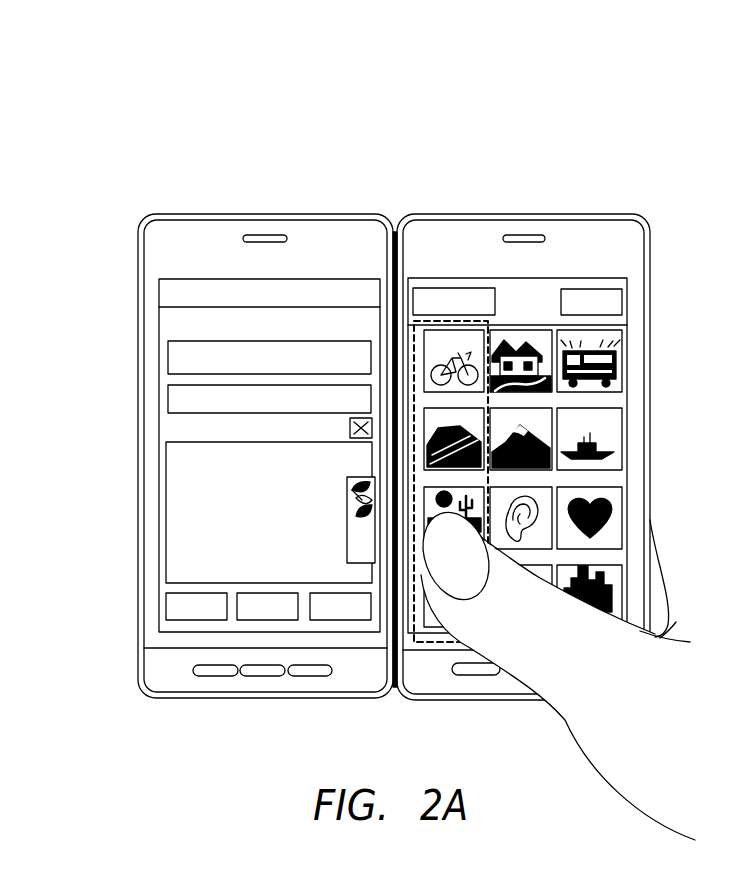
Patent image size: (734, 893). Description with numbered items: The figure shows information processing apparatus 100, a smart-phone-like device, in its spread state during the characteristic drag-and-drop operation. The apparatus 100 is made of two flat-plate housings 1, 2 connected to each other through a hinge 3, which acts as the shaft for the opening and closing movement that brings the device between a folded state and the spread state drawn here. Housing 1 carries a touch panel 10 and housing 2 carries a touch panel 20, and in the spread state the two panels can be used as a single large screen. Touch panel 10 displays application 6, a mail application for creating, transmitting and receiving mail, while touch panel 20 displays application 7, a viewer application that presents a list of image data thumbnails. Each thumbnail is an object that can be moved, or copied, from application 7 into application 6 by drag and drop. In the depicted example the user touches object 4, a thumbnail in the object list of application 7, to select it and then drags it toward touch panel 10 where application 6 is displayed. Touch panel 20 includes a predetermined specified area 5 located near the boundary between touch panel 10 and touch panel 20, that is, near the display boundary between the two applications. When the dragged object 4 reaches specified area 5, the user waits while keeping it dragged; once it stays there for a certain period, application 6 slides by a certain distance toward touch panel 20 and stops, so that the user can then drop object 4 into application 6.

The information processing apparatus 100 is at (583, 136).
The housing 1 is at (271, 212).
The housing 2 is at (551, 213).
The hinge 3 is at (396, 232).
The touch panel 10 is at (235, 455).
The application 6 is at (157, 490).
The object 4 is at (347, 520).
The application 7 is at (547, 413).
The touch panel 20 is at (612, 400).
The specified area 5 is at (468, 320).